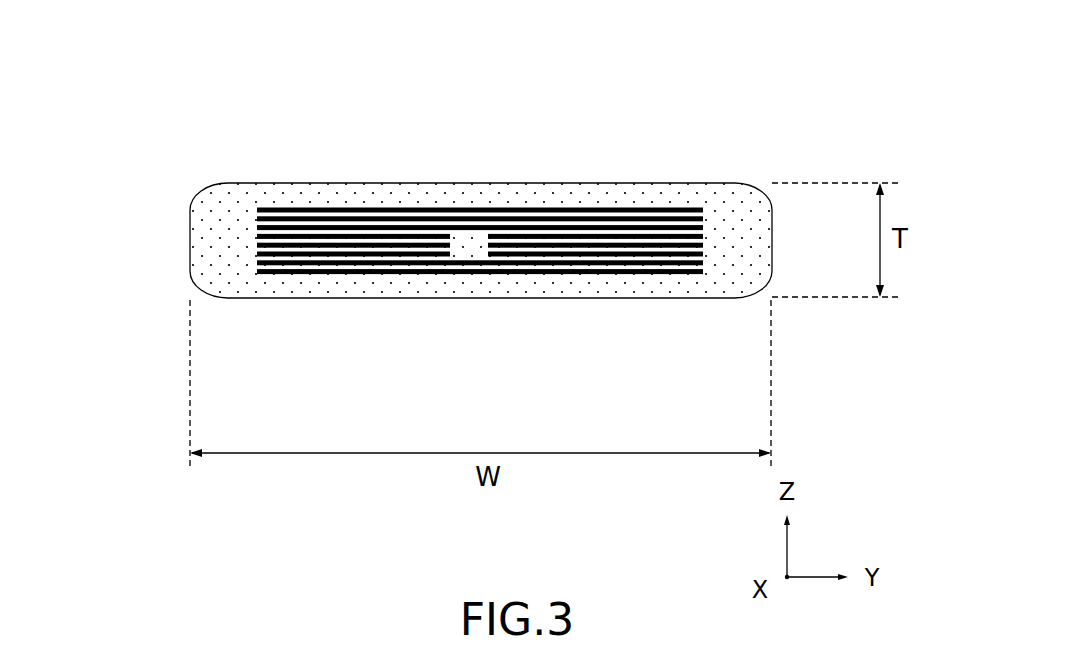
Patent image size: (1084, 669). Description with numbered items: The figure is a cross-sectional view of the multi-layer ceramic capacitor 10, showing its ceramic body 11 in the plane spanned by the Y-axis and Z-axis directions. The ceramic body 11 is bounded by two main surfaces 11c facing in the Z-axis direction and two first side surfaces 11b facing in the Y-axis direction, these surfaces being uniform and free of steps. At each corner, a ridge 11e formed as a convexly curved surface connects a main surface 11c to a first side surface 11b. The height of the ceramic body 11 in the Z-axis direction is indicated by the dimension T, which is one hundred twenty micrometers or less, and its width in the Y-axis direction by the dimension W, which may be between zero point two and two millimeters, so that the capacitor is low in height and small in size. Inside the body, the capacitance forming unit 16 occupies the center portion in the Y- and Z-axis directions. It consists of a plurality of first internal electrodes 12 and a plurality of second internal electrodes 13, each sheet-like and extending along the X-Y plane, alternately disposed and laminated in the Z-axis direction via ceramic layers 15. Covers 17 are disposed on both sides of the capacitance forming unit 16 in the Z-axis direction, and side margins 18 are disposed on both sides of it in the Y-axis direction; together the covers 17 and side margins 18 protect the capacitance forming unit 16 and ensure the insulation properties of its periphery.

The multi-layer ceramic capacitor 10 is at (762, 132).
The ceramic body 11 is at (415, 312).
The first side surfaces 11b is at (190, 240).
The main surfaces 11c is at (698, 183).
The ridges 11e is at (208, 186).
The first internal electrodes 12 is at (410, 265).
The second internal electrodes 13 is at (497, 268).
The ceramic layers 15 is at (613, 262).
The capacitance forming unit 16 is at (452, 262).
The covers 17 is at (325, 197).
The side margins 18 is at (240, 250).